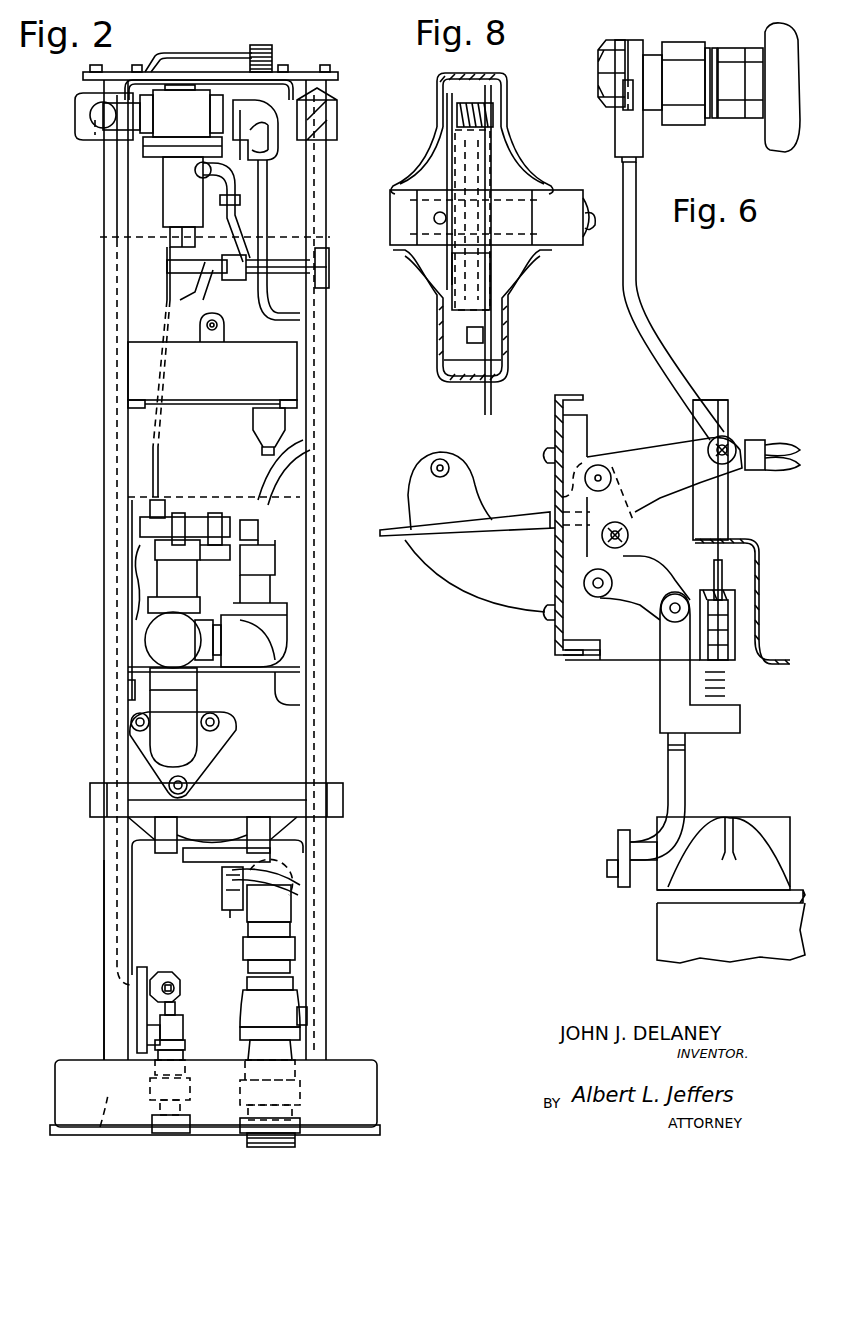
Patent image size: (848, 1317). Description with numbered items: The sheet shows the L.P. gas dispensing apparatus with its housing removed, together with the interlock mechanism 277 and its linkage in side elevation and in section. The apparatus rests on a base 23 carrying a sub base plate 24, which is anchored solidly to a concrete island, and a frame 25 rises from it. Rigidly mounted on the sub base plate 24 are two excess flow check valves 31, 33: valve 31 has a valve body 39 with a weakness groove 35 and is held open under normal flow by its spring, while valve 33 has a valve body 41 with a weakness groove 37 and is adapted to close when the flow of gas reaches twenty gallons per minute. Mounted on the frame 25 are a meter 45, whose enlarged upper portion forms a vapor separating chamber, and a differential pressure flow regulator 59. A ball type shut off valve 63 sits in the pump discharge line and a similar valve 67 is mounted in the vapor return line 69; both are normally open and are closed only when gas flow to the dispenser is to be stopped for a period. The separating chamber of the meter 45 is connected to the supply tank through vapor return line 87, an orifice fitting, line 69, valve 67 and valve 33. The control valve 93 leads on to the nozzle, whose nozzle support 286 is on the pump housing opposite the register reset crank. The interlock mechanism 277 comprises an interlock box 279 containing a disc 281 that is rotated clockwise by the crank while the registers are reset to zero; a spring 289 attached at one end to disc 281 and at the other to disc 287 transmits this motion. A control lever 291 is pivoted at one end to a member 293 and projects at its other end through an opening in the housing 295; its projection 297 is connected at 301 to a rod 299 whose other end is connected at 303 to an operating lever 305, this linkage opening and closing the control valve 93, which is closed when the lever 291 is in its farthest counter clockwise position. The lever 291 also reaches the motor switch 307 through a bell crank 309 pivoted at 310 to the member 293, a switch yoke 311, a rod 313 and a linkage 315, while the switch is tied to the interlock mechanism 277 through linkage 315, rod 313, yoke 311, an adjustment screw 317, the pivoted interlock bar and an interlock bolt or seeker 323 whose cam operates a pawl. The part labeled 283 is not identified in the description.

In FIG. 2, the base 23 is at (377, 1084).
In FIG. 2, the sub base plate 24 is at (92, 1101).
In FIG. 2, the frame 25 is at (104, 896).
In FIG. 2, the excess flow check valve 31 is at (300, 1088).
In FIG. 2, the excess flow check valve 33 is at (183, 1095).
In FIG. 2, the weakness groove 35 is at (320, 1083).
In FIG. 2, the weakness groove 37 is at (155, 1090).
In FIG. 2, the valve body 39 is at (293, 1105).
In FIG. 2, the valve body 41 is at (182, 1100).
In FIG. 2, the meter 45 is at (268, 745).
In FIG. 2, the differential pressure flow regulator 59 is at (194, 217).
In FIG. 2, the ball type shut off valve 63 is at (246, 1005).
In FIG. 2, the ball type shut off valve 67 is at (183, 1032).
In FIG. 2, the vapor return line 69 is at (142, 522).
In FIG. 2, the vapor return line 87 is at (160, 547).
In FIG. 6, the control valve 93 is at (780, 45).
In FIG. 8, the interlock mechanism 277 is at (543, 148).
In FIG. 8, the interlock box 279 is at (440, 372).
In FIG. 8, the disc 281 is at (440, 318).
In FIG. 8, the shaft 283 is at (573, 242).
In FIG. 6, the shaft 283 is at (764, 470).
In FIG. 6, the nozzle support 286 is at (468, 466).
In FIG. 8, the disc 287 is at (488, 265).
In FIG. 8, the spring 289 is at (430, 276).
In FIG. 6, the control lever 291 is at (385, 534).
In FIG. 6, the member 293 is at (590, 415).
In FIG. 6, the housing 295 is at (567, 378).
In FIG. 6, the projection 297 is at (630, 450).
In FIG. 6, the rod 299 is at (636, 280).
In FIG. 6, the connection 301 is at (736, 440).
In FIG. 6, the connection 303 is at (604, 50).
In FIG. 6, the operating lever 305 is at (626, 50).
In FIG. 6, the motor switch 307 is at (615, 910).
In FIG. 6, the bell crank 309 is at (645, 590).
In FIG. 6, the pivot connection 310 is at (598, 608).
In FIG. 6, the switch yoke 311 is at (660, 703).
In FIG. 6, the rod 313 is at (686, 762).
In FIG. 6, the linkage 315 is at (612, 828).
In FIG. 6, the adjustment screw 317 is at (735, 625).
In FIG. 6, the interlock bolt 323 is at (730, 560).